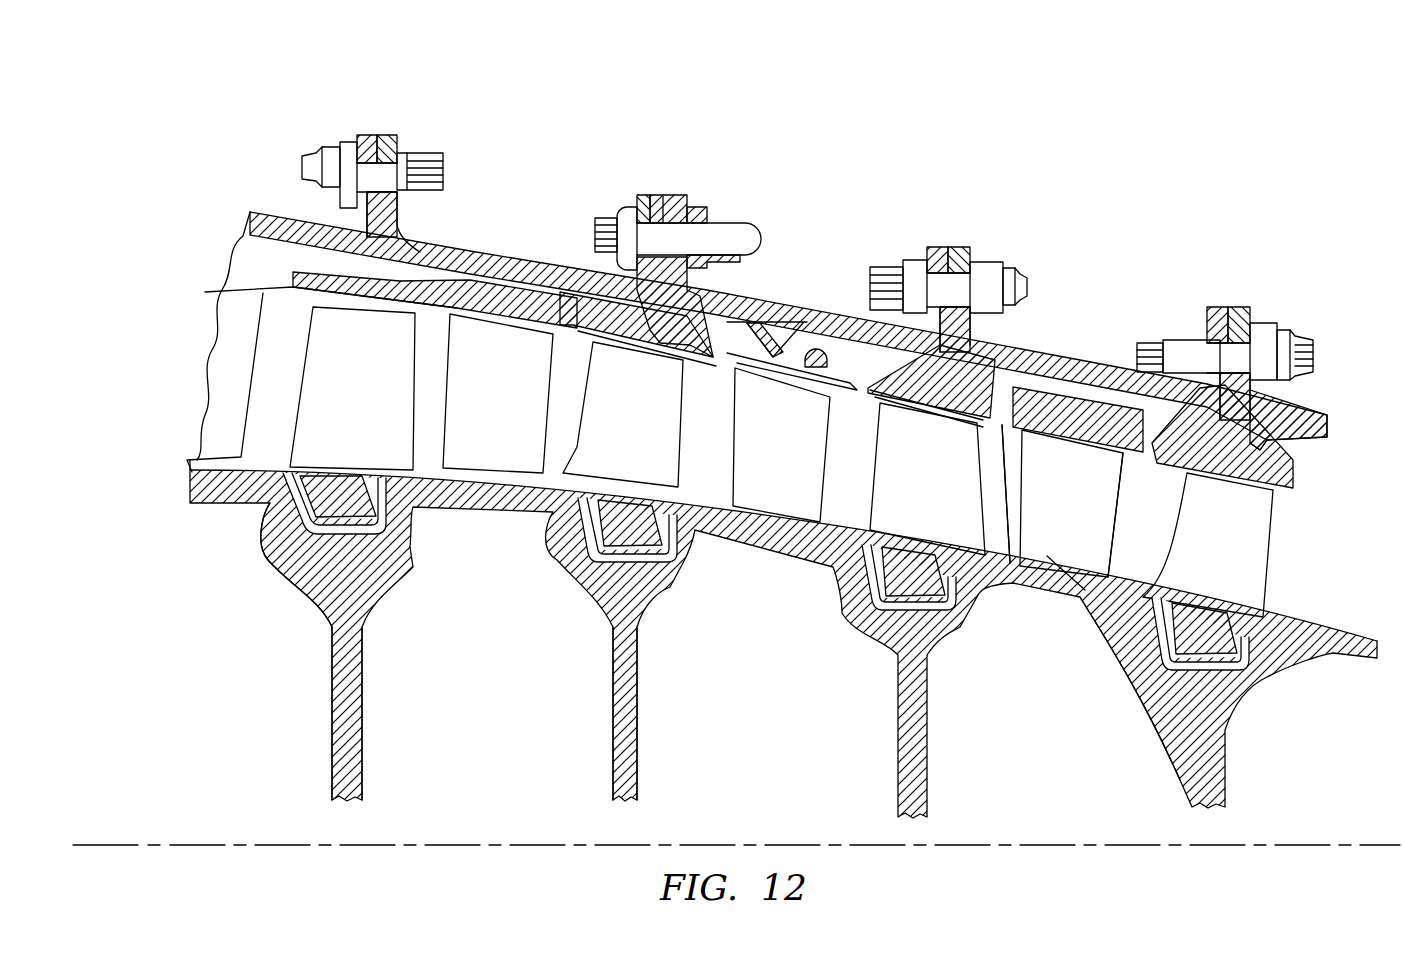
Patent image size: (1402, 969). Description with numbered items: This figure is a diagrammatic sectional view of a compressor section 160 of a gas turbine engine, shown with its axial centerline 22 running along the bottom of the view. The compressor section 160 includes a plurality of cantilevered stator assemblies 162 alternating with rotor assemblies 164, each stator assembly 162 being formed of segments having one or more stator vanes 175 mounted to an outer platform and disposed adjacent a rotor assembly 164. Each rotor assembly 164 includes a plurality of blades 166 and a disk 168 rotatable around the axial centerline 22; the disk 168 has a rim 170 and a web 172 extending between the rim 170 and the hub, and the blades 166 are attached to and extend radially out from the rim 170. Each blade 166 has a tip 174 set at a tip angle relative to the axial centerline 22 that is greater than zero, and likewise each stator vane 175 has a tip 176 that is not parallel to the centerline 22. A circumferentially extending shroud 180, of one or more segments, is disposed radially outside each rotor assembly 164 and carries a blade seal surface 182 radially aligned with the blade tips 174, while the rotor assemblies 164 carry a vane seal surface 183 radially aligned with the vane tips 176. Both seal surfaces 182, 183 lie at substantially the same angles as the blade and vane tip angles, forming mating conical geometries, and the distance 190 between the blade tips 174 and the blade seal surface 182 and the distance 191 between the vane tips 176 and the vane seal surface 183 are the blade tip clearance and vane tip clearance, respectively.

The axial centerline 22 is at (196, 841).
The compressor section 160 is at (350, 104).
The cantilevered stator assembly 162 is at (480, 450).
The rotor assembly 164 is at (314, 779).
The blade 166 is at (300, 402).
The disk 168 is at (640, 703).
The rim 170 is at (272, 553).
The web 172 is at (335, 752).
The blade tip 174 is at (333, 312).
The stator vane 175 is at (1118, 557).
The vane tip 176 is at (1085, 590).
The shroud 180 is at (423, 237).
The blade seal surface 182 is at (357, 293).
The vane seal surface 183 is at (1102, 600).
The blade tip clearance 190 is at (887, 397).
The vane tip clearance 191 is at (1010, 563).